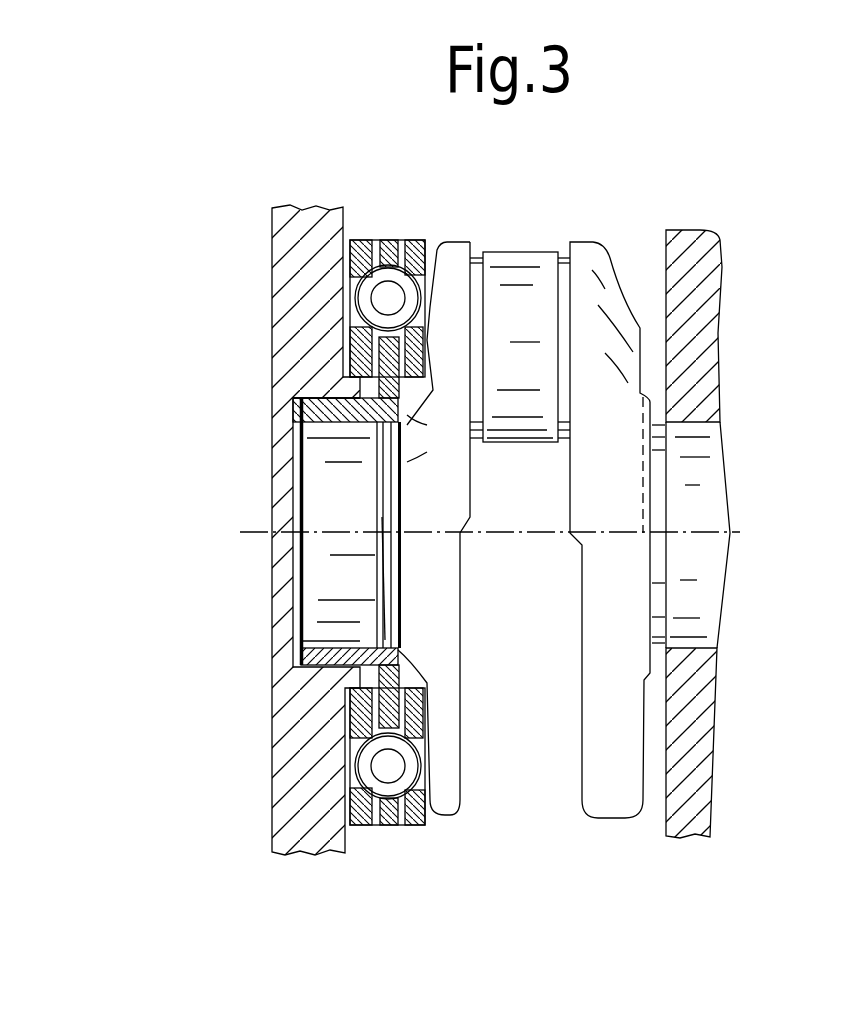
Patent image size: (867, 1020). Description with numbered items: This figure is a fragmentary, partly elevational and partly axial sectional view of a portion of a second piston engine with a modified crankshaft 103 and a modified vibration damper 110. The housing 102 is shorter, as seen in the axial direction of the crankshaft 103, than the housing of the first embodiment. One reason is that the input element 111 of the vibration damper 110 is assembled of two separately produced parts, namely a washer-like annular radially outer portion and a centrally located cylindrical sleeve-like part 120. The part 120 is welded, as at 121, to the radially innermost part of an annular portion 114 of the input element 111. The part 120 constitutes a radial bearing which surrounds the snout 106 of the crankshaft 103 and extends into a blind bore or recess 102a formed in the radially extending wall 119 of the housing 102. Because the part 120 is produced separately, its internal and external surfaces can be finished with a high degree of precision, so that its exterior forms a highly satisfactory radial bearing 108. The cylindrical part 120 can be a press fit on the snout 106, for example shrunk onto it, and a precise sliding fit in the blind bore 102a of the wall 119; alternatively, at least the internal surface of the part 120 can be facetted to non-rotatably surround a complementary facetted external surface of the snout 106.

The housing 102 is at (293, 235).
The blind bore 102a is at (320, 395).
The crankshaft 103 is at (685, 580).
The snout 106 is at (320, 589).
The radial bearing 108 is at (341, 395).
The vibration damper 110 is at (376, 230).
The input element 111 is at (343, 703).
The annular portion 114 is at (390, 243).
The radially extending wall 119 is at (300, 395).
The cylindrical sleeve-like part 120 is at (293, 658).
The weld 121 is at (395, 666).